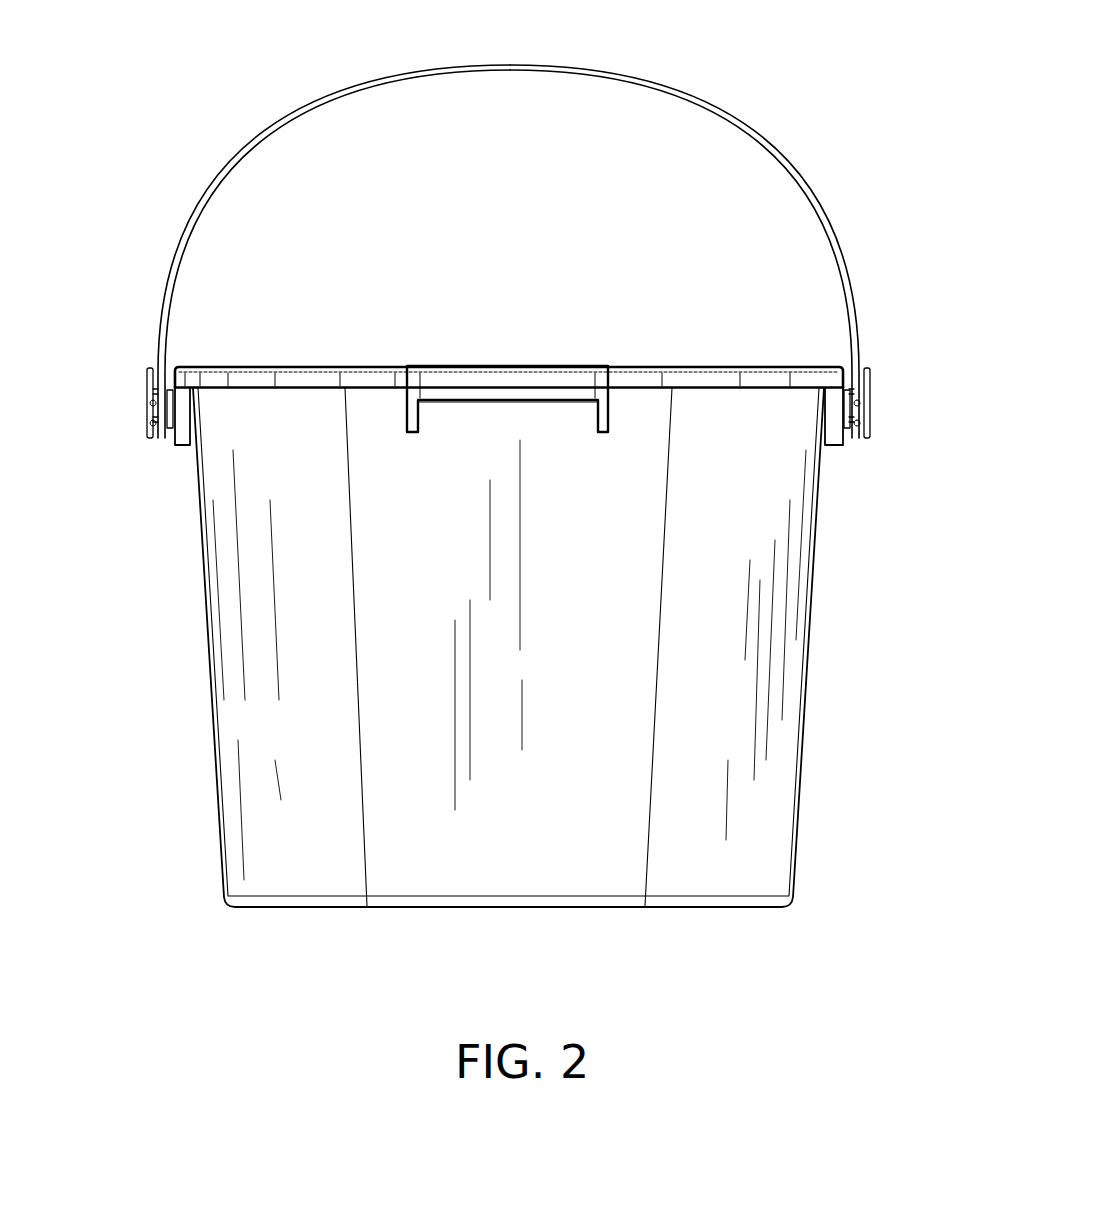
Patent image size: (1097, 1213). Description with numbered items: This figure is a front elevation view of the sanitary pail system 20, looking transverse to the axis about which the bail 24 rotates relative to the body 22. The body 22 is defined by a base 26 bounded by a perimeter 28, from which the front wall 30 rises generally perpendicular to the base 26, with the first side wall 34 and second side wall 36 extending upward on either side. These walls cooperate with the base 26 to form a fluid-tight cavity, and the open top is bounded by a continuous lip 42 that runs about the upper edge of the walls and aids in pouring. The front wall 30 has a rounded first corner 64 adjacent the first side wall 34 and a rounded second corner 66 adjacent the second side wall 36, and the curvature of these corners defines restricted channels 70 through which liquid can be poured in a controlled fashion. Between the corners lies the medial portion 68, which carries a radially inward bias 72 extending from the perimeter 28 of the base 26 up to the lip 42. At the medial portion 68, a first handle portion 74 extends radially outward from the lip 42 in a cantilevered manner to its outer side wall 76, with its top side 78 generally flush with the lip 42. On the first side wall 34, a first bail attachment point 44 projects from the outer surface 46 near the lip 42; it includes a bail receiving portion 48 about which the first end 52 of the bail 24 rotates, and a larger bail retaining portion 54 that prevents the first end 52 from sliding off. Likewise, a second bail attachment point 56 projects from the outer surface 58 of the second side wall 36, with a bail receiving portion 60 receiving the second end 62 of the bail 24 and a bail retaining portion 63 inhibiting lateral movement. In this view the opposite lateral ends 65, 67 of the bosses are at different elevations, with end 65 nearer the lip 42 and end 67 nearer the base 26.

The sanitary pail system 20 is at (870, 86).
The body 22 is at (700, 425).
The bail 24 is at (834, 243).
The base 26 is at (450, 918).
The perimeter 28 is at (471, 904).
The front wall 30 is at (590, 868).
The first side wall 34 is at (190, 624).
The second side wall 36 is at (818, 652).
The lip 42 is at (285, 386).
The first bail attachment point 44 is at (146, 346).
The outer surface 46 is at (205, 538).
The bail receiving portion 48 is at (161, 457).
The first end 52 is at (150, 415).
The bail retaining portion 54 is at (148, 388).
The second bail attachment point 56 is at (870, 345).
The outer surface 58 is at (820, 518).
The bail receiving portion 60 is at (861, 447).
The second end 62 is at (862, 408).
The bail retaining portion 63 is at (871, 393).
The first corner 64 is at (285, 822).
The lateral end 65 is at (155, 372).
The second corner 66 is at (750, 838).
The lateral end 67 is at (147, 398).
The medial portion 68 is at (506, 647).
The channels 70 is at (262, 356).
The bias 72 is at (424, 365).
The first handle portion 74 is at (400, 416).
The outer side wall 76 is at (505, 381).
The top side 78 is at (540, 365).